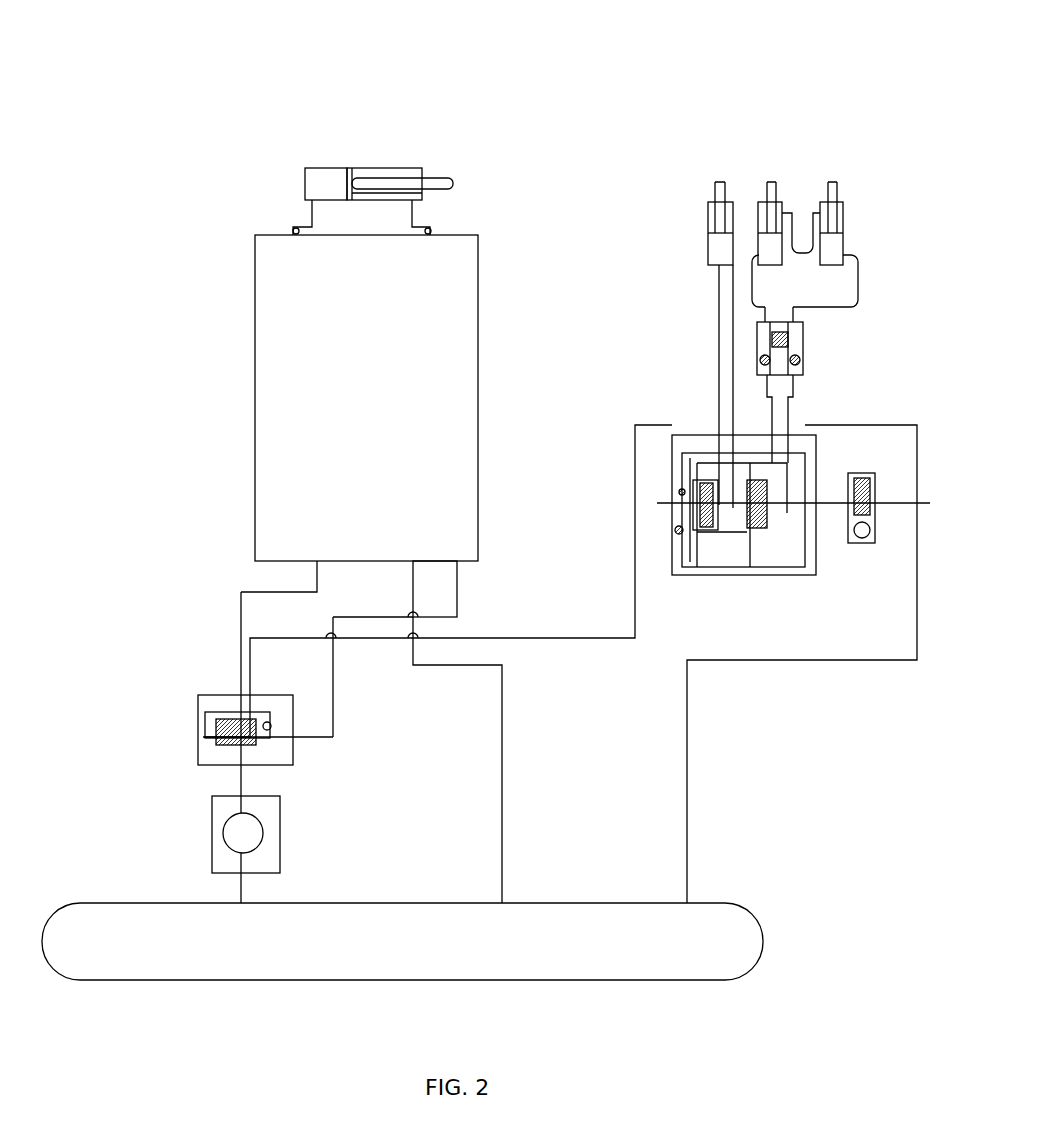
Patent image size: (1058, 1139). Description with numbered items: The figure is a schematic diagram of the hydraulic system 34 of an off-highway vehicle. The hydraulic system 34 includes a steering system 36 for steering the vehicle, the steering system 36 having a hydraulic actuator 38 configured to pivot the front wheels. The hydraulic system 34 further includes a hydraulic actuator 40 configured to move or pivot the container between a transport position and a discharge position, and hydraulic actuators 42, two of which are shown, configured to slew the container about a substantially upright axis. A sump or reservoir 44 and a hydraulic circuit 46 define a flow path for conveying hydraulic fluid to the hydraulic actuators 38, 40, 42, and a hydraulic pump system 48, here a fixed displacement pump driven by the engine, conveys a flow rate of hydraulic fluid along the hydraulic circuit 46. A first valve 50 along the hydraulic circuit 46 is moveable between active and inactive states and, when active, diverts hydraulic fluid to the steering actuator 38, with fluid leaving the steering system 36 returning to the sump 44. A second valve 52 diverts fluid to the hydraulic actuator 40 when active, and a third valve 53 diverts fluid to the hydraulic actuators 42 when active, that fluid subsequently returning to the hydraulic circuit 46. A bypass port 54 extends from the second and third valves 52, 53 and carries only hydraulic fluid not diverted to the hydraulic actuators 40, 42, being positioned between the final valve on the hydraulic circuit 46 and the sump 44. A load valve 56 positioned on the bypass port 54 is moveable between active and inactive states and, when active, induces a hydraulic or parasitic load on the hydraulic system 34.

The hydraulic system 34 is at (222, 106).
The steering system 36 is at (255, 398).
The hydraulic actuator 38 is at (395, 177).
The hydraulic actuator 40 is at (713, 218).
The hydraulic actuator 42 is at (775, 207).
The sump 44 is at (610, 960).
The hydraulic circuit 46 is at (297, 640).
The hydraulic pump system 48 is at (213, 832).
The first valve 50 is at (200, 708).
The second valve 52 is at (710, 487).
The third valve 53 is at (760, 484).
The bypass port 54 is at (743, 436).
The load valve 56 is at (875, 486).